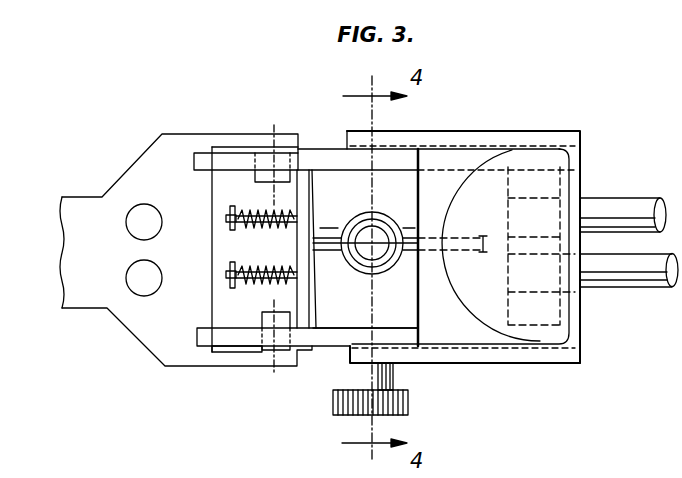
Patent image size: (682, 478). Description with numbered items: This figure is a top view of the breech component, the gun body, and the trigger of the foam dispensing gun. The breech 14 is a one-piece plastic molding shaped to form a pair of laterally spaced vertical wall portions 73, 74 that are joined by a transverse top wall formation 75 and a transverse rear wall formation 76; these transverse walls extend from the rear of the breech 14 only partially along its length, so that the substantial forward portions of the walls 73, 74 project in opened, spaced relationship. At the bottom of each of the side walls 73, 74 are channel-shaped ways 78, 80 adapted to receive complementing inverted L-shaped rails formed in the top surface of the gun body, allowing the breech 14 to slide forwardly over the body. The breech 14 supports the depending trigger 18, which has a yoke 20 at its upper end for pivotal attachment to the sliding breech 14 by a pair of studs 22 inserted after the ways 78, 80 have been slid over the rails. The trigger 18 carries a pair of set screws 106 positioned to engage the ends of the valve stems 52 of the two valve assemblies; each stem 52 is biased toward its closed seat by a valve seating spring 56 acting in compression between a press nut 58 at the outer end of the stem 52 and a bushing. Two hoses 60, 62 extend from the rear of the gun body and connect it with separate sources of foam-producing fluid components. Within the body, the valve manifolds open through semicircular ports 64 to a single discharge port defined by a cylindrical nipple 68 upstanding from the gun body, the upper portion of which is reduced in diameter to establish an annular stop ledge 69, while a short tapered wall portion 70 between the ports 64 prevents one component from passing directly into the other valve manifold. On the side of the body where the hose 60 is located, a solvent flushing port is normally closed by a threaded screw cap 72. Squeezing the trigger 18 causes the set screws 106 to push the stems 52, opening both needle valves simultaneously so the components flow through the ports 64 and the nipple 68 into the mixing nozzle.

The breech 14 is at (588, 366).
The trigger 18 is at (78, 288).
The yoke 20 is at (237, 135).
The studs 22 is at (254, 178).
The stem 52 is at (278, 268).
The valve seating spring 56 is at (258, 210).
The press nut 58 is at (228, 220).
The hose 60 is at (640, 272).
The hose 62 is at (630, 208).
The semicircular ports 64 is at (378, 253).
The cylindrical nipple 68 is at (352, 237).
The annular stop ledge 69 is at (352, 262).
The tapered wall portion 70 is at (372, 243).
The threaded screw cap 72 is at (408, 402).
The vertical wall portion 73 is at (327, 160).
The vertical wall portion 74 is at (336, 335).
The top wall formation 75 is at (426, 211).
The rear wall formation 76 is at (523, 223).
The channel-shaped way 78 is at (455, 130).
The channel-shaped way 80 is at (485, 366).
The set screws 106 is at (140, 231).